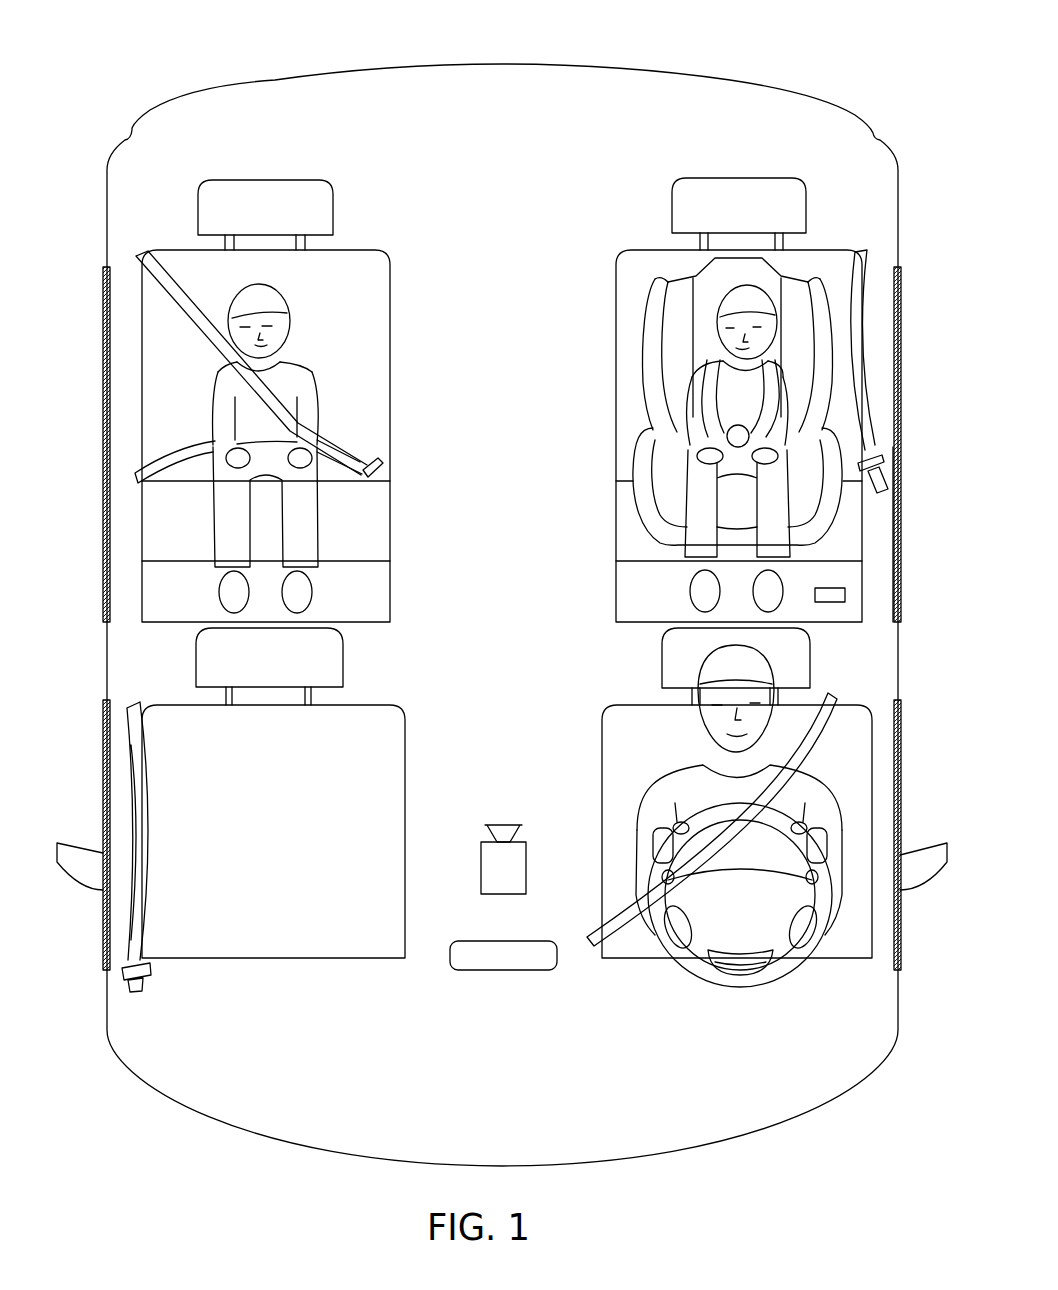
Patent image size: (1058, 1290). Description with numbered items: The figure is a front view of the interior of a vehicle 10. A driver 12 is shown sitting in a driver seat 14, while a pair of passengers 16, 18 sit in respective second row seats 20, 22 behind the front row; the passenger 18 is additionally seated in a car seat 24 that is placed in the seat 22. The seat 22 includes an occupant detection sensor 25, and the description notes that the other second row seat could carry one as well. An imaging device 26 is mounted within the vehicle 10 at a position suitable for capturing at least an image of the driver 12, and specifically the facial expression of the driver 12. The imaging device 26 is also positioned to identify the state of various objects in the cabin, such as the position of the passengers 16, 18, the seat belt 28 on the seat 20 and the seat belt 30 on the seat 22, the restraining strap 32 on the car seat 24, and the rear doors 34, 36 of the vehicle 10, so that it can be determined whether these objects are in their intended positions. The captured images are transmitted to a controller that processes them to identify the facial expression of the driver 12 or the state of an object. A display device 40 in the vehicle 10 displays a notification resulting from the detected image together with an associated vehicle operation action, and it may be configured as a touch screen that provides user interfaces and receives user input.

The vehicle 10 is at (137, 87).
The driver 12 is at (660, 783).
The driver seat 14 is at (602, 772).
The passenger 16 is at (308, 373).
The passenger 18 is at (693, 385).
The second row seat 20 is at (390, 320).
The second row seat 22 is at (616, 301).
The car seat 24 is at (650, 311).
The occupant detection sensor 25 is at (832, 603).
The imaging device 26 is at (481, 868).
The seat belt 28 is at (350, 456).
The seat belt 30 is at (862, 255).
The restraining strap 32 is at (727, 440).
The rear door 34 is at (104, 300).
The rear door 36 is at (900, 316).
The display device 40 is at (500, 971).